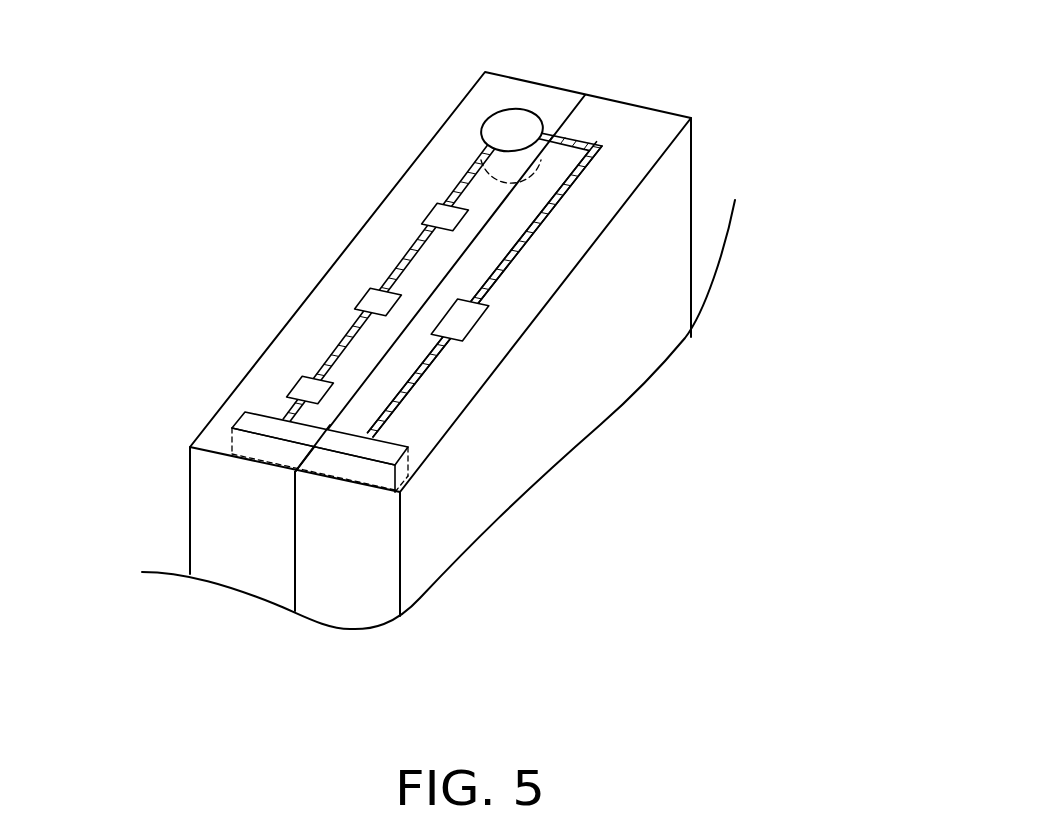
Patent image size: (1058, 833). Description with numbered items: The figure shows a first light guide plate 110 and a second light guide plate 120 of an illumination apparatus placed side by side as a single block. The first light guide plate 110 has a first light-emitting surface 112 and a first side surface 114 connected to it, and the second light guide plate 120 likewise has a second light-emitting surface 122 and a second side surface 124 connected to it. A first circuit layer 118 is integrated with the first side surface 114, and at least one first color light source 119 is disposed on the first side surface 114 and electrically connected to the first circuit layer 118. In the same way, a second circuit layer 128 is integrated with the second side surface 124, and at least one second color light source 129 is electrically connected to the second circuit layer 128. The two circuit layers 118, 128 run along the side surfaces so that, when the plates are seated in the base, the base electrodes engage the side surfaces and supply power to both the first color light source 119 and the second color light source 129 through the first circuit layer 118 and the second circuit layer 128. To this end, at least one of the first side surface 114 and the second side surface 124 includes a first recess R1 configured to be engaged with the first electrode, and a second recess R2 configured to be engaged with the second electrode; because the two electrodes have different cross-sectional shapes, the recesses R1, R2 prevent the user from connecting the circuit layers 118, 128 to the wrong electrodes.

The first light guide plate 110 is at (438, 345).
The first light-emitting surface 112 is at (176, 514).
The first side surface 114 is at (530, 82).
The first circuit layer 118 is at (417, 243).
The first color light source 119 is at (373, 300).
The second light guide plate 120 is at (692, 170).
The second light-emitting surface 122 is at (309, 574).
The second side surface 124 is at (624, 104).
The second circuit layer 128 is at (533, 233).
The second color light source 129 is at (467, 310).
The first recess R1 is at (243, 418).
The second recess R2 is at (486, 121).